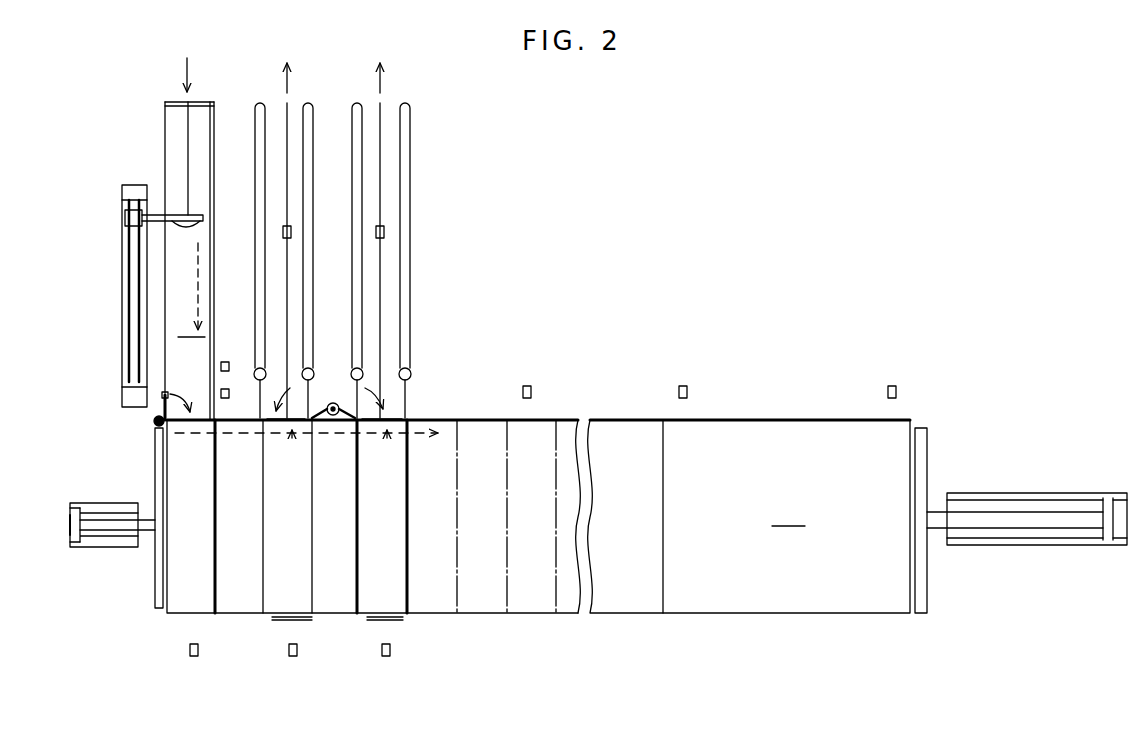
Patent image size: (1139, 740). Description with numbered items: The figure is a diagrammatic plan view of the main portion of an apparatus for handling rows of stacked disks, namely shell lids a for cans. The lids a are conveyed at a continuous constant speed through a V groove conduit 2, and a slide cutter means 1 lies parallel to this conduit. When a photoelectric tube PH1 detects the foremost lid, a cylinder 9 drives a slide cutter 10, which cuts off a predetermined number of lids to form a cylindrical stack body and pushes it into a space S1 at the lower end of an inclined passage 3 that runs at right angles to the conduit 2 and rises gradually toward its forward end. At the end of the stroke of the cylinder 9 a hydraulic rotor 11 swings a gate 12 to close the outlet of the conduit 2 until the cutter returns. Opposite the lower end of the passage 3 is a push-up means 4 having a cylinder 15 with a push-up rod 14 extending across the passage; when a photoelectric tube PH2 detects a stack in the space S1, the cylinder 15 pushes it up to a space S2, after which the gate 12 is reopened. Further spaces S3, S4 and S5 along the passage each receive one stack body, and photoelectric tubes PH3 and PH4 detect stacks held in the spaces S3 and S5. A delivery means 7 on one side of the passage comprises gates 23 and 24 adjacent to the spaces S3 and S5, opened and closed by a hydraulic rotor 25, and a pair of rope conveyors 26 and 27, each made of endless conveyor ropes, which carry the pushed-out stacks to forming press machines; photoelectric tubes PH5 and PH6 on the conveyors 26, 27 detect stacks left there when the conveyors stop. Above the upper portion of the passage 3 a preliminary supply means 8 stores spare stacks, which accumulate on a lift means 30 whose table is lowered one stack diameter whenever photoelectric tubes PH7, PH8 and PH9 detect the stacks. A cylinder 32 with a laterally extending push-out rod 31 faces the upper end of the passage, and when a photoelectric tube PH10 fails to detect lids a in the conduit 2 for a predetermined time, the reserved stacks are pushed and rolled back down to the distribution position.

The slide cutter means 1 is at (120, 247).
The V groove conduit 2 is at (204, 198).
The inclined passage 3 is at (481, 438).
The push-up means 4 is at (116, 553).
The delivery means 7 is at (388, 321).
The preliminary supply means 8 is at (815, 436).
The cylinder 9 is at (131, 185).
The slide cutter 10 is at (157, 212).
The hydraulic rotor 11 is at (156, 427).
The gate 12 is at (160, 407).
The push-up rod 14 is at (158, 584).
The cylinder 15 is at (96, 503).
The gate 23 is at (297, 418).
The gate 24 is at (388, 419).
The hydraulic rotor 25 is at (333, 402).
The rope conveyor 26 is at (308, 150).
The rope conveyor 27 is at (414, 145).
The lift means 30 is at (788, 512).
The push-out rod 31 is at (926, 434).
The cylinder 32 is at (1037, 492).
The shell lid a is at (178, 338).
The photoelectric tube PH1 is at (221, 393).
The photoelectric tube PH2 is at (194, 656).
The photoelectric tube PH3 is at (293, 656).
The photoelectric tube PH4 is at (386, 656).
The photoelectric tube PH5 is at (292, 232).
The photoelectric tube PH6 is at (385, 233).
The photoelectric tube PH7 is at (528, 386).
The photoelectric tube PH8 is at (683, 386).
The photoelectric tube PH9 is at (892, 386).
The photoelectric tube PH10 is at (221, 366).
The space S1 is at (192, 598).
The space S2 is at (237, 598).
The space S3 is at (285, 598).
The space S4 is at (333, 598).
The space S5 is at (381, 598).